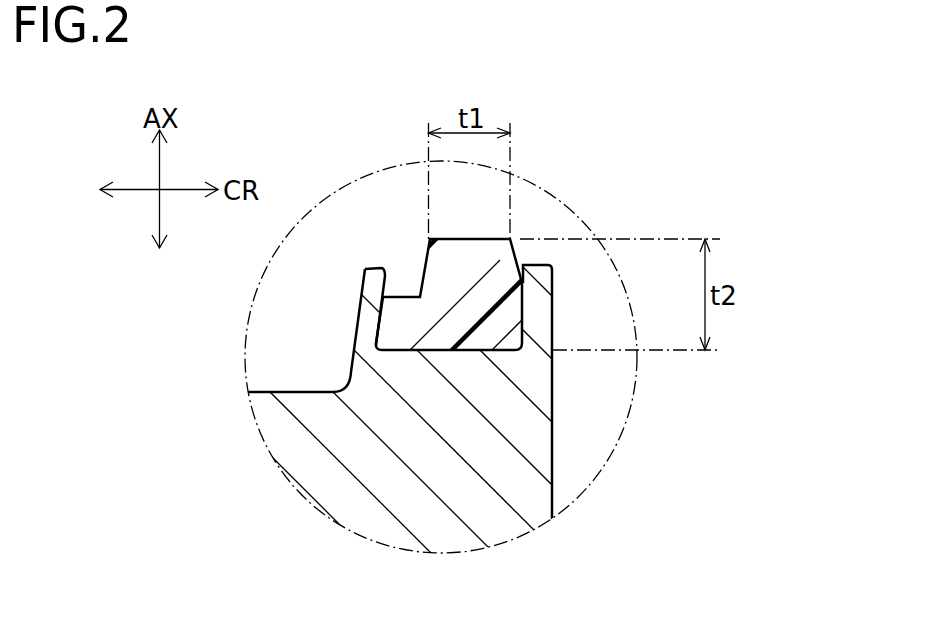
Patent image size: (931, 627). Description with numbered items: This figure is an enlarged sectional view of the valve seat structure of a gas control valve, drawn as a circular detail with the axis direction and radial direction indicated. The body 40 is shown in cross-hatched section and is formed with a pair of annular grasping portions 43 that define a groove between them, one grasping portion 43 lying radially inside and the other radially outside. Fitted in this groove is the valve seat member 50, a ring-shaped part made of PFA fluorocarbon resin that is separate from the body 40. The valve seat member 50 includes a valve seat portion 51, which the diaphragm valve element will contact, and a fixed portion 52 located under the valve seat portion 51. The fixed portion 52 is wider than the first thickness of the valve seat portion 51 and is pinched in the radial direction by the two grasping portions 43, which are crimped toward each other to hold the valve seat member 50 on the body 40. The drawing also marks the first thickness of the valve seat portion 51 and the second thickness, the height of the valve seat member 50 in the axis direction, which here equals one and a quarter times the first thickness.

The body 40 is at (363, 453).
The grasping portions 43 is at (358, 309).
The valve seat member 50 is at (356, 128).
The valve seat portion 51 is at (470, 264).
The fixed portion 52 is at (458, 323).